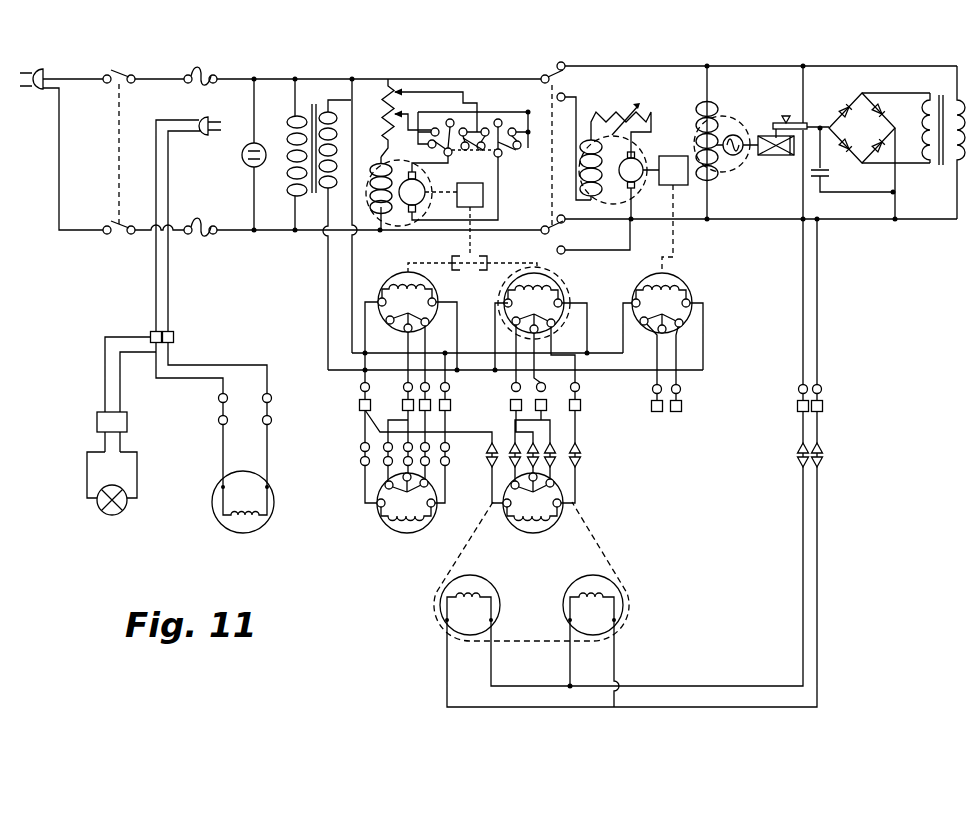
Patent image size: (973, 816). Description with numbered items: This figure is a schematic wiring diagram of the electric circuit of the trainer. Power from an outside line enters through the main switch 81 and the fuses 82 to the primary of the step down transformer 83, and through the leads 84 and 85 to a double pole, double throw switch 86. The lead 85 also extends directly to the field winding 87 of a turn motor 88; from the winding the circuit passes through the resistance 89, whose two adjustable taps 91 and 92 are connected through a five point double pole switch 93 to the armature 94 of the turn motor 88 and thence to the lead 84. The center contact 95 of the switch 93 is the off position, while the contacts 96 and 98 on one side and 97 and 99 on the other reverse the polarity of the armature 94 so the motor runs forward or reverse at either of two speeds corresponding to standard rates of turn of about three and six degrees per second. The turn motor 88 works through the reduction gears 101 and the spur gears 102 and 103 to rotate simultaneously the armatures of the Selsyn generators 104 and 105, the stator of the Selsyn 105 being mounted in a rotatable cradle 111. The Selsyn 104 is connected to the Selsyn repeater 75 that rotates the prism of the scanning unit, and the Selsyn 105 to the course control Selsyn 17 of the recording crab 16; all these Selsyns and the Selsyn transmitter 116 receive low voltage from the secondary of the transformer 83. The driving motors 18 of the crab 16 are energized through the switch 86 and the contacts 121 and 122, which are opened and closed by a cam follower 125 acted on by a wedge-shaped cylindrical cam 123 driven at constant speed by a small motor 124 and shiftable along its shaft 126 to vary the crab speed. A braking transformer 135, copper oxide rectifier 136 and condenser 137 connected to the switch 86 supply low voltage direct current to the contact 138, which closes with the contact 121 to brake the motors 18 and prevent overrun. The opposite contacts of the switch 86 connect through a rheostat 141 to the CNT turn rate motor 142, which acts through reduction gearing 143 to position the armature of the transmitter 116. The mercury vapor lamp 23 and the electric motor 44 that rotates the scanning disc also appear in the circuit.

The recording crab 16 is at (601, 545).
The course control Selsyn 17 is at (550, 518).
The driving motors 18 is at (493, 612).
The mercury vapor lamp 23 is at (112, 515).
The electric motor 44 is at (273, 513).
The Selsyn motor 75 is at (428, 516).
The main switch 81 is at (124, 70).
The fuses 82 is at (201, 68).
The step down transformer 83 is at (321, 106).
The lead 84 is at (355, 79).
The lead 85 is at (300, 233).
The double pole, double throw switch 86 is at (566, 80).
The field winding 87 is at (381, 165).
The turn motor 88 is at (398, 226).
The resistance 89 is at (384, 112).
The adjustable tap 91 is at (412, 124).
The adjustable tap 92 is at (402, 88).
The five point double pole switch 93 is at (455, 157).
The armature 94 is at (413, 213).
The center contact 95 is at (450, 118).
The contact 96 is at (436, 127).
The contact 97 is at (463, 127).
The contact 98 is at (429, 145).
The contact 99 is at (518, 149).
The reduction gears 101 is at (483, 193).
The spur gear 102 is at (420, 264).
The spur gear 103 is at (488, 260).
The Selsyn generator 104 is at (441, 281).
The Selsyn motor 105 is at (569, 282).
The rotatable cradle 111 is at (497, 306).
The Selsyn transmitter 116 is at (691, 282).
The contact 121 is at (782, 124).
The contact 122 is at (795, 118).
The wedge-shaped cylindrical cam 123 is at (776, 156).
The small motor 124 is at (711, 188).
The cam follower 125 is at (757, 136).
The shaft 126 is at (743, 165).
The braking transformer 135 is at (951, 165).
The copper oxide rectifier 136 is at (874, 138).
The condenser 137 is at (829, 175).
The contact 138 is at (762, 151).
The rheostat 141 is at (616, 112).
The CNT turn rate motor 142 is at (650, 146).
The reduction gearing 143 is at (663, 186).